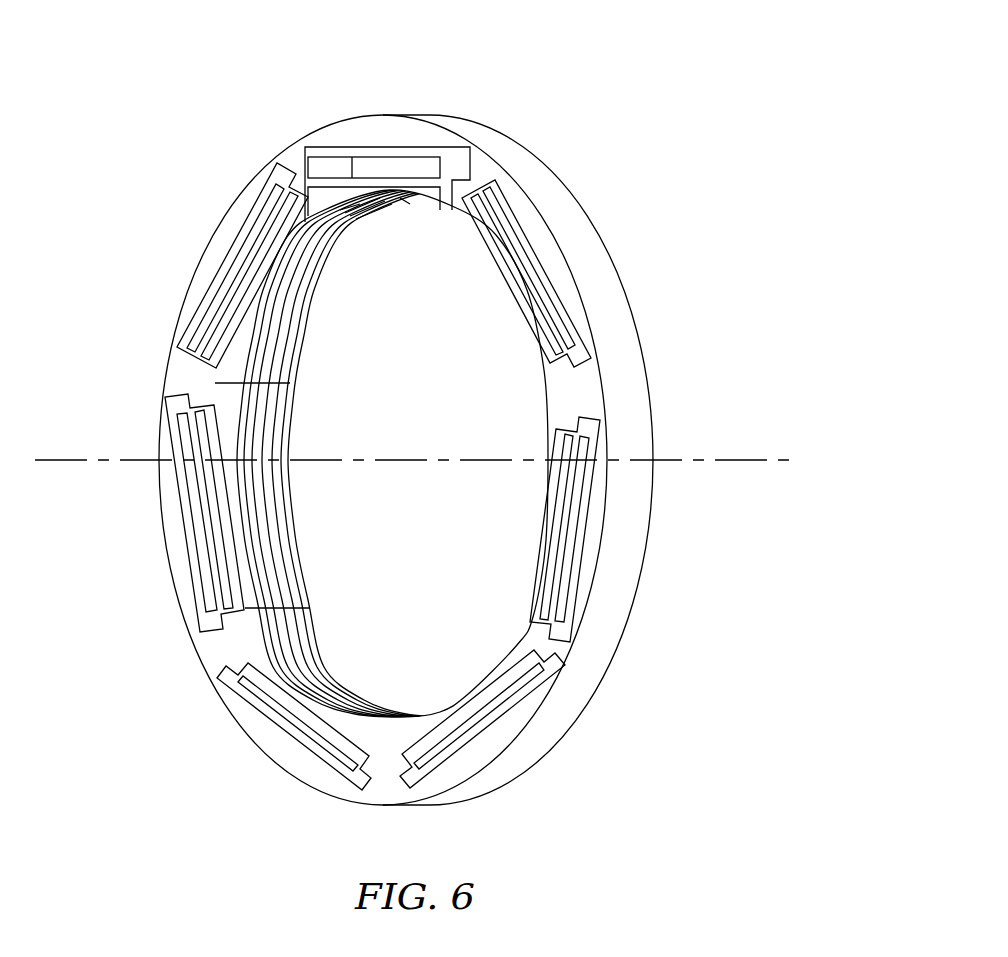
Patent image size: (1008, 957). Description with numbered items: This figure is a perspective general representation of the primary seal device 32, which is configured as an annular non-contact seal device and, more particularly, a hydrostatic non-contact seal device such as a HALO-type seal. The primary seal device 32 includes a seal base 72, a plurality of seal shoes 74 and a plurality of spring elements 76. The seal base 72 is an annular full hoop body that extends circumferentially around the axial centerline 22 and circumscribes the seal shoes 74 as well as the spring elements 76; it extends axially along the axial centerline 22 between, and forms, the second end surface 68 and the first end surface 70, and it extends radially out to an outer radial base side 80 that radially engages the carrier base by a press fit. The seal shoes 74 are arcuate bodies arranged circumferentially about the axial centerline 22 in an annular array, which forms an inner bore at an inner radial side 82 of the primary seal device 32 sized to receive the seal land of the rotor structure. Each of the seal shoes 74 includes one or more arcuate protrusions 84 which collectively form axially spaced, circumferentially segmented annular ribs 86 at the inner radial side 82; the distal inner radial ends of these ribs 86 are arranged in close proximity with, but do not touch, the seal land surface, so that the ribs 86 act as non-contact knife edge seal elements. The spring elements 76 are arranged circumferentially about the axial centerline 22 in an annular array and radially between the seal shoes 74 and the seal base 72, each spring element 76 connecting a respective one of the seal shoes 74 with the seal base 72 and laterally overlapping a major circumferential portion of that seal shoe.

The axial centerline 22 is at (112, 462).
The primary seal device 32 is at (607, 99).
The second end surface 68 is at (547, 249).
The first end surface 70 is at (608, 252).
The seal base 72 is at (338, 132).
The seal shoes 74 is at (406, 198).
The spring elements 76 is at (386, 140).
The outer radial base side 80 is at (568, 211).
The inner radial side 82 is at (317, 306).
The arcuate protrusions 84 is at (250, 532).
The ribs 86 is at (282, 557).